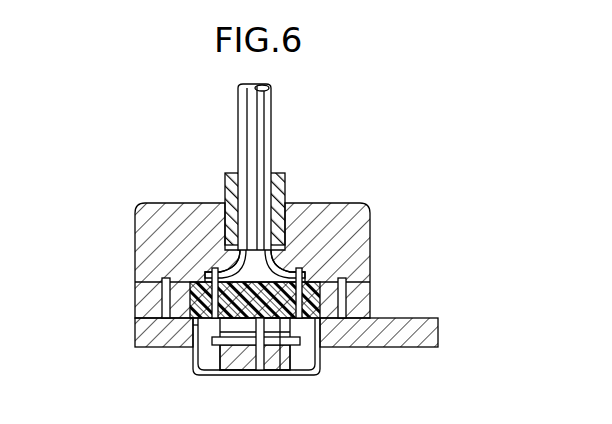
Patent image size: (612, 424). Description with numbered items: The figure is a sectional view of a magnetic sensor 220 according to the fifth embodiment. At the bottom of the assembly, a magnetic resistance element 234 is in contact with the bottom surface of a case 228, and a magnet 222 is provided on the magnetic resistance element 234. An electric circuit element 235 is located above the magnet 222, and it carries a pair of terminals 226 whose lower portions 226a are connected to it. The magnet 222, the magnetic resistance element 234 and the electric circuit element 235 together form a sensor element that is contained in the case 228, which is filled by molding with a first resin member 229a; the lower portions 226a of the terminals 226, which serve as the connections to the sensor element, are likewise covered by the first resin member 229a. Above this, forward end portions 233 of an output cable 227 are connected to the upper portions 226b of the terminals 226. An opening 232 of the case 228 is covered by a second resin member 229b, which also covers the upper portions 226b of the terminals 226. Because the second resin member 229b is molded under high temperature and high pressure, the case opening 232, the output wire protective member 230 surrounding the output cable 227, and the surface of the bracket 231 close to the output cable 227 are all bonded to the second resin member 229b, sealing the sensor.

The magnetic sensor 220 is at (423, 188).
The magnet 222 is at (238, 362).
The terminals 226 is at (350, 298).
The lower portions 226a is at (304, 341).
The upper portions 226b is at (302, 270).
The output cable 227 is at (272, 107).
The case 228 is at (322, 366).
The first resin member 229a is at (162, 297).
The second resin member 229b is at (352, 245).
The output wire protective member 230 is at (286, 177).
The bracket 231 is at (413, 328).
The opening 232 is at (378, 252).
The forward end portions 233 is at (276, 254).
The magnetic resistance element 234 is at (275, 362).
The electric circuit element 235 is at (195, 326).